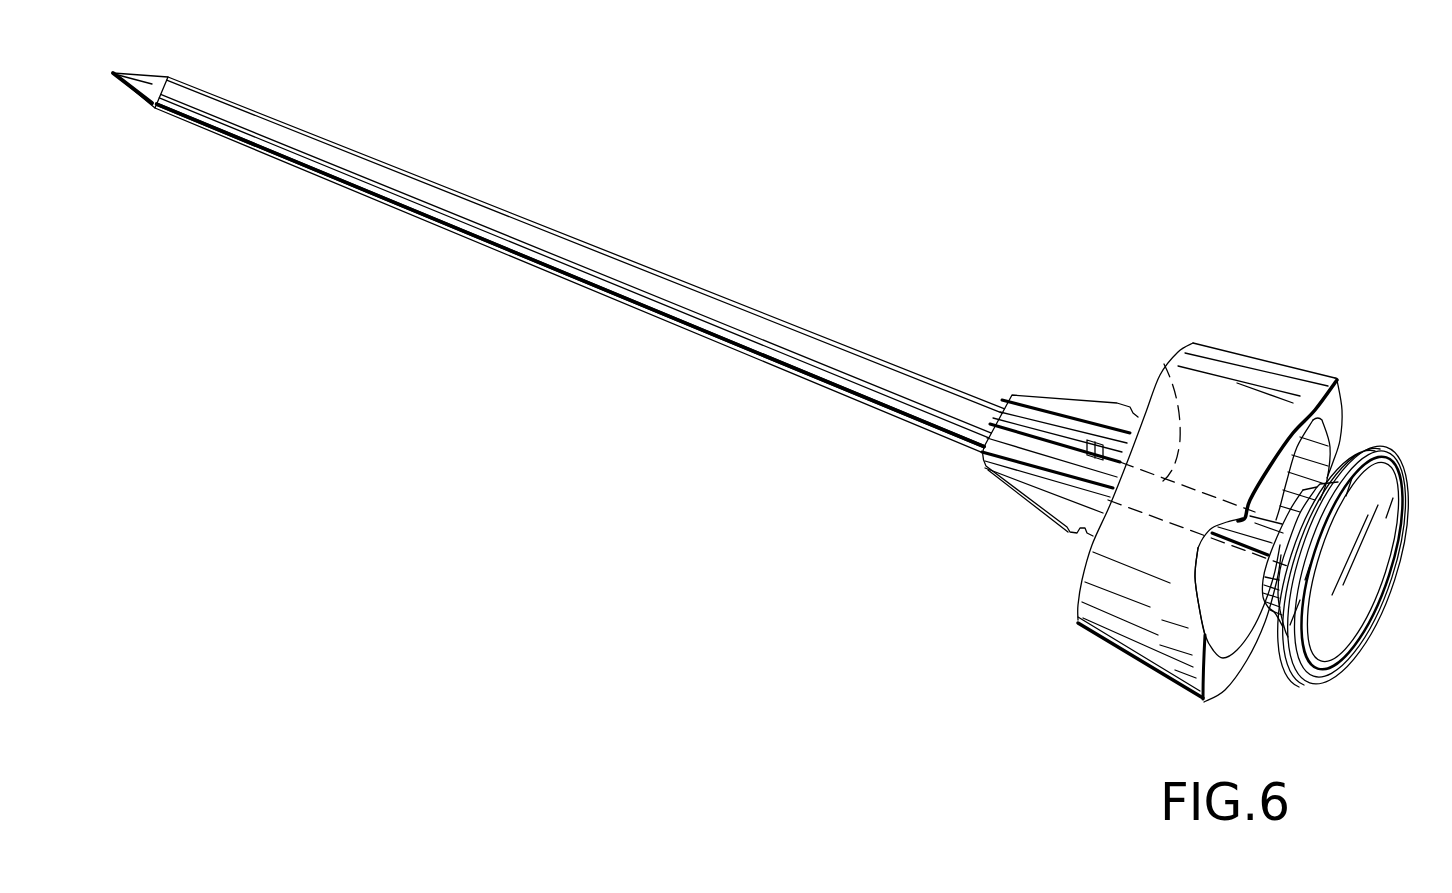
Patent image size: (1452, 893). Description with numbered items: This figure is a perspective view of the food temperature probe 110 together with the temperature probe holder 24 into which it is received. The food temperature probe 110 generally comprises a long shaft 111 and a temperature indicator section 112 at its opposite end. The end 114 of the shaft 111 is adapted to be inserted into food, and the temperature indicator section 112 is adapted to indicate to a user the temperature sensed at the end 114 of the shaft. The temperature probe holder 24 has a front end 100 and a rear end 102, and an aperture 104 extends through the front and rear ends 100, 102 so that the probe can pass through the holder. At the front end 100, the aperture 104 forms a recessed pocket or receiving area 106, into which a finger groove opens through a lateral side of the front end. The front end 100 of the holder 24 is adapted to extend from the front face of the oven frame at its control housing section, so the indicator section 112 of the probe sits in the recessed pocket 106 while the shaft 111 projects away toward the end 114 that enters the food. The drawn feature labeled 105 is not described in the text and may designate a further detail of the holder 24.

The temperature probe holder 24 is at (1233, 352).
The front end 100 is at (1336, 403).
The rear end 102 is at (1096, 394).
The aperture 104 is at (1164, 364).
The slot 105 is at (1197, 587).
The recessed pocket 106 is at (1215, 649).
The food temperature probe 110 is at (604, 250).
The shaft 111 is at (619, 300).
The temperature indicator section 112 is at (1390, 570).
The end of the shaft 114 is at (157, 113).